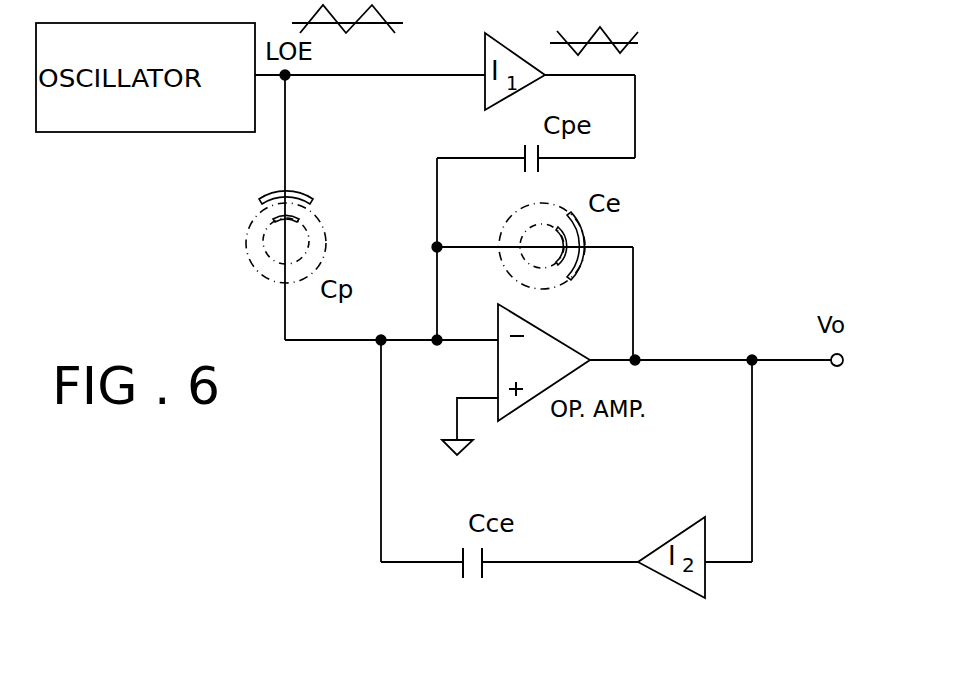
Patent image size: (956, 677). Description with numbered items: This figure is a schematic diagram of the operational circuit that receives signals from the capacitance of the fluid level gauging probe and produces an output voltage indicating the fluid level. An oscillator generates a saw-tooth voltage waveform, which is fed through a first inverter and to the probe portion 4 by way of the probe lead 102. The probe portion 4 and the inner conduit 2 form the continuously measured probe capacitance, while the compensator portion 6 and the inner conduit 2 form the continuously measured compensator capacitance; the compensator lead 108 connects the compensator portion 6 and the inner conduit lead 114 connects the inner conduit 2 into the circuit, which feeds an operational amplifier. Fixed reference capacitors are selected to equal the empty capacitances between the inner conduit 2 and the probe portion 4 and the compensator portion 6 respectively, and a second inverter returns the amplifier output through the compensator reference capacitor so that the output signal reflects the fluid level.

The inner conduit 2 is at (298, 216).
The probe portion 4 is at (313, 198).
The compensator portion 6 is at (588, 220).
The probe lead 102 is at (285, 142).
The compensator lead 108 is at (633, 295).
The inner conduit lead 114 is at (436, 299).